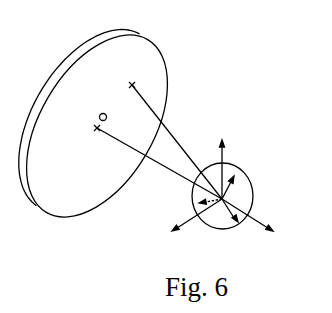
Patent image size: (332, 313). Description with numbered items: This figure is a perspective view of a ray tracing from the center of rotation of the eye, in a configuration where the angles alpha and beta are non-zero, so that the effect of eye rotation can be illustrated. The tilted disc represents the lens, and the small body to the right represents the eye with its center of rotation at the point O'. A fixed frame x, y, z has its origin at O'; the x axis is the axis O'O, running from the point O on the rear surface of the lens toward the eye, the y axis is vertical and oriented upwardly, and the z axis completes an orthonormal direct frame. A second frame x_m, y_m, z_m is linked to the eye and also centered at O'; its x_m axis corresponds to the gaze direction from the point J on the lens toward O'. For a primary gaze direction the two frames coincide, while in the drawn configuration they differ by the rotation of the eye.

The point J is at (170, 140).
The point O is at (158, 157).
The origin O' of the moving coordinate frame (x_m, y_m, z_m) O' is at (222, 188).